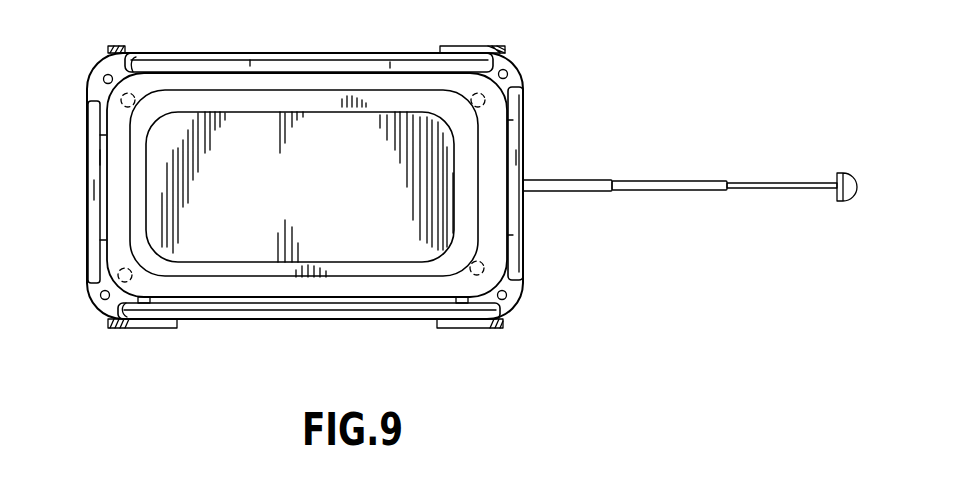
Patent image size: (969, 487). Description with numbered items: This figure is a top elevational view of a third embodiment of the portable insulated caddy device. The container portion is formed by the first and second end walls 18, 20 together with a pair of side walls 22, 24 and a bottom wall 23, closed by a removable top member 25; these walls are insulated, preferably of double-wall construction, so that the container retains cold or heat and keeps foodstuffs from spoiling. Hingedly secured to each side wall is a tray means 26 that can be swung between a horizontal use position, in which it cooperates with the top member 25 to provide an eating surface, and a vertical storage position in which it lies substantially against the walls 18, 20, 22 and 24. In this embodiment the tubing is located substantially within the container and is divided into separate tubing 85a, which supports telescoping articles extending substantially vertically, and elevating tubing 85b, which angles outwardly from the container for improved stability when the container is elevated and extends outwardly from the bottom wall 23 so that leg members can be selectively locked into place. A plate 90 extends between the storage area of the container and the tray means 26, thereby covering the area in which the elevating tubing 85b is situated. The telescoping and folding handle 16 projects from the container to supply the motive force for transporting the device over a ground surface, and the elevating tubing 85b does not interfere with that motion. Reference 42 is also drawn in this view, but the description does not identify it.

The telescoping and folding handle 16 is at (778, 189).
The first end wall 18 is at (106, 188).
The second end wall 20 is at (555, 183).
The side wall 22 is at (299, 298).
The bottom wall 23 is at (297, 210).
The side wall 24 is at (320, 73).
The removable top member 25 is at (525, 230).
The tray means 26 is at (262, 199).
The housing corner 42 is at (97, 77).
The tubing 85a is at (101, 82).
The elevating tubing 85b is at (121, 101).
The plate 90 is at (409, 82).